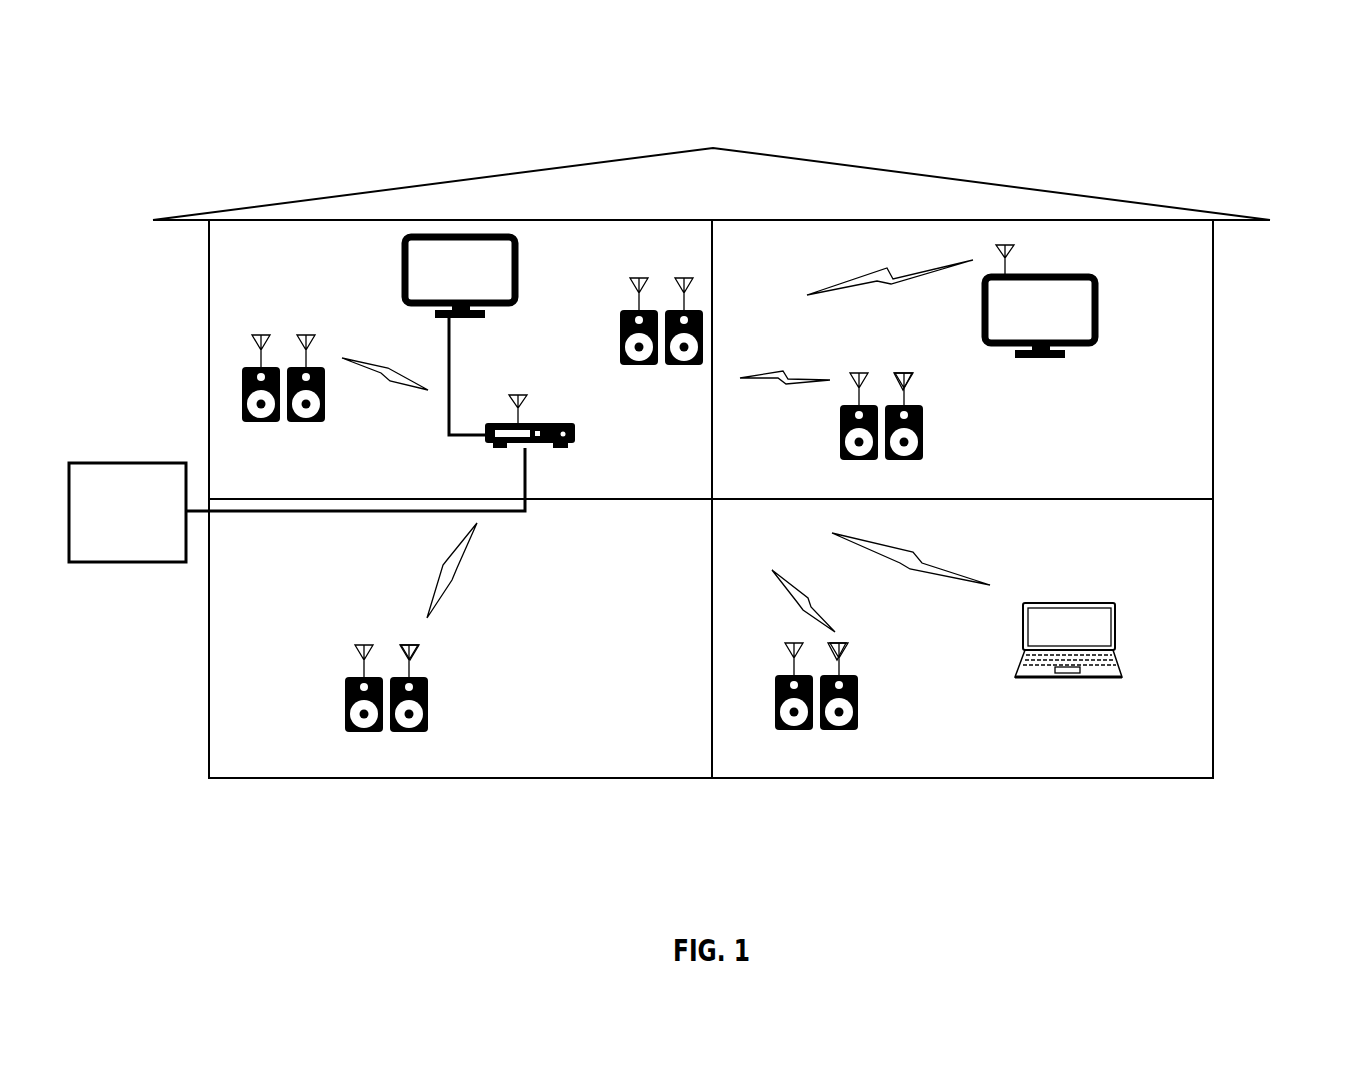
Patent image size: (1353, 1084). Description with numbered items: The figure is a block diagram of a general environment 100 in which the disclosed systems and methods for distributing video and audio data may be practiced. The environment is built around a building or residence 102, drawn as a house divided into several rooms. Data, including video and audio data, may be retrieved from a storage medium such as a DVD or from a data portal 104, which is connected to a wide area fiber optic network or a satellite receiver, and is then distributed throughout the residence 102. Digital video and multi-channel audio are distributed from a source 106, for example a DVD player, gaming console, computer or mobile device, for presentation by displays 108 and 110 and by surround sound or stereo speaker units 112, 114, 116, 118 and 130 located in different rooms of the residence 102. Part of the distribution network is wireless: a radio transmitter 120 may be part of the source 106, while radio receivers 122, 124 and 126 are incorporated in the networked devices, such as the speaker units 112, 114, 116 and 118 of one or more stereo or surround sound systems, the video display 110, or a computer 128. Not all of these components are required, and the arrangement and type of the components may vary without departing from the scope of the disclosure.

The environment 100 is at (1252, 112).
The building or residence 102 is at (1195, 820).
The data portal 104 is at (143, 552).
The source 106 is at (575, 435).
The display 108 is at (405, 272).
The video display 110 is at (1095, 340).
The speaker unit 112 is at (325, 422).
The speaker unit 114 is at (923, 458).
The speaker unit 116 is at (428, 730).
The speaker unit 118 is at (858, 730).
The radio transmitter 120 is at (526, 402).
The radio receiver 122 is at (413, 655).
The radio receiver 124 is at (843, 655).
The radio receiver 126 is at (910, 378).
The computer 128 is at (1122, 672).
The speaker unit 130 is at (620, 330).